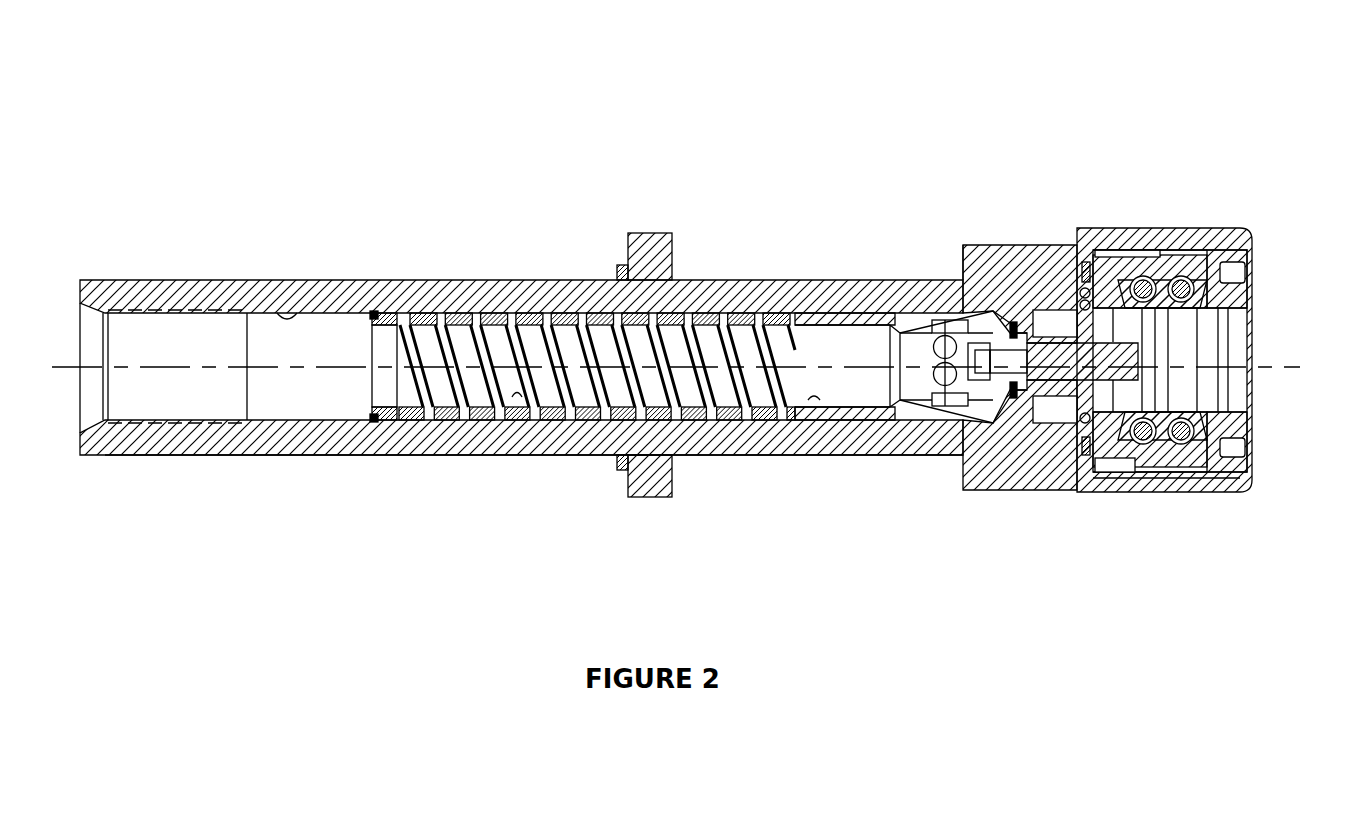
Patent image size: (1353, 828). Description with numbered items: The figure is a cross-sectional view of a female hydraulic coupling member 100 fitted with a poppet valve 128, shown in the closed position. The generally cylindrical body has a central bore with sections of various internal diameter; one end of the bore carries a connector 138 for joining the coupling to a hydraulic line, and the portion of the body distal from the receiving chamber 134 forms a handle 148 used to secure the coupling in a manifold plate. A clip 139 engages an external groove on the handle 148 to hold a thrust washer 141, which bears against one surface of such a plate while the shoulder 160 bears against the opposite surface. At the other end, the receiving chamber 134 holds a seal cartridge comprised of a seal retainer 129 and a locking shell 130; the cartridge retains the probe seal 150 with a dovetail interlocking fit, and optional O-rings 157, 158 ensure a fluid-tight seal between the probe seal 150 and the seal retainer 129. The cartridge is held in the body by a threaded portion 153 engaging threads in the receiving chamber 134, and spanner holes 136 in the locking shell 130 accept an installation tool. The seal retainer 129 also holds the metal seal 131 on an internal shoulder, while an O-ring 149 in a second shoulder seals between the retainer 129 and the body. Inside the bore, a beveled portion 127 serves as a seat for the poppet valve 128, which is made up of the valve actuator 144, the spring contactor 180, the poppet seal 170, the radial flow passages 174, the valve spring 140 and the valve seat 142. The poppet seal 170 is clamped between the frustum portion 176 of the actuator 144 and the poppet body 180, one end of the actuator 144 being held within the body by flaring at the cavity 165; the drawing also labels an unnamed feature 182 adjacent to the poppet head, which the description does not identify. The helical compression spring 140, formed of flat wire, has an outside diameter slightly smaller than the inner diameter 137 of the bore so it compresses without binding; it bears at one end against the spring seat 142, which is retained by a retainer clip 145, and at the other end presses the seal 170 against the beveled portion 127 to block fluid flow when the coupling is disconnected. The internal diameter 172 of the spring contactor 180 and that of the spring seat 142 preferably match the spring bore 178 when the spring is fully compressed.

The female hydraulic coupling member 100 is at (915, 78).
The beveled portion 127 is at (935, 440).
The poppet valve 128 is at (933, 312).
The seal retainer 129 is at (1120, 440).
The locking shell 130 is at (1250, 420).
The metal seal 131 is at (1085, 262).
The receiving chamber 134 is at (1030, 410).
The spanner holes 136 is at (1246, 272).
The inner diameter 137 is at (287, 311).
The connector 138 is at (137, 310).
The clip 139 is at (620, 265).
The valve spring 140 is at (572, 417).
The thrust washer 141 is at (655, 233).
The valve seat 142 is at (380, 312).
The valve actuator 144 is at (1065, 410).
The retainer clip 145 is at (373, 422).
The handle 148 is at (395, 455).
The O-ring 149 is at (1090, 275).
The probe seal 150 is at (1160, 420).
The threaded portion 153 is at (1205, 465).
The O-ring 157 is at (1143, 280).
The O-ring 158 is at (1183, 280).
The shoulder 160 is at (955, 260).
The cavity 165 is at (905, 440).
The poppet seal 170 is at (1012, 400).
The internal diameter 172 is at (798, 425).
The radial flow passages 174 is at (905, 322).
The frustum portion 176 is at (1083, 298).
The spring bore 178 is at (517, 397).
The spring contactor 180 is at (825, 318).
The balls 182 is at (940, 336).